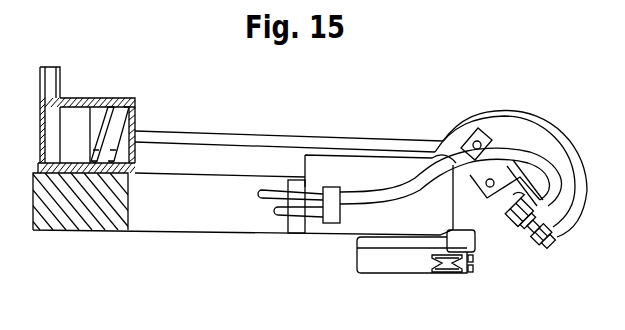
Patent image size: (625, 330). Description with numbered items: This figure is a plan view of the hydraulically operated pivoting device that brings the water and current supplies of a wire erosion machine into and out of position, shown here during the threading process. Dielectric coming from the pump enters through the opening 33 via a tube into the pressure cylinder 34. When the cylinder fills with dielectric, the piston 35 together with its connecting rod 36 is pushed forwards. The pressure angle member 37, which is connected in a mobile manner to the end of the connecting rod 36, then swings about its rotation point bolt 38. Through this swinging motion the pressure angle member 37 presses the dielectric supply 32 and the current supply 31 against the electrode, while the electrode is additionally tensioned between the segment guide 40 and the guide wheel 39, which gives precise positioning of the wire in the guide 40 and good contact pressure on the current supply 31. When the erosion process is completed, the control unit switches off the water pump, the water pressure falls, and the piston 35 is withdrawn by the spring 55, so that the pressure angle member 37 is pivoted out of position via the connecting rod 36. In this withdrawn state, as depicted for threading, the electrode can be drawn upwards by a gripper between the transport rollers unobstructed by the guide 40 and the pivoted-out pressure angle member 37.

The current supply 31 is at (557, 262).
The dielectric supply 32 is at (532, 248).
The opening 33 is at (51, 70).
The pressure cylinder 34 is at (97, 100).
The piston 35 is at (74, 110).
The connecting rod 36 is at (212, 136).
The pressure angle member 37 is at (500, 133).
The rotation point bolt 38 is at (490, 188).
The guide wheel 39 is at (440, 268).
The segment guide 40 is at (472, 274).
The spring 55 is at (133, 118).